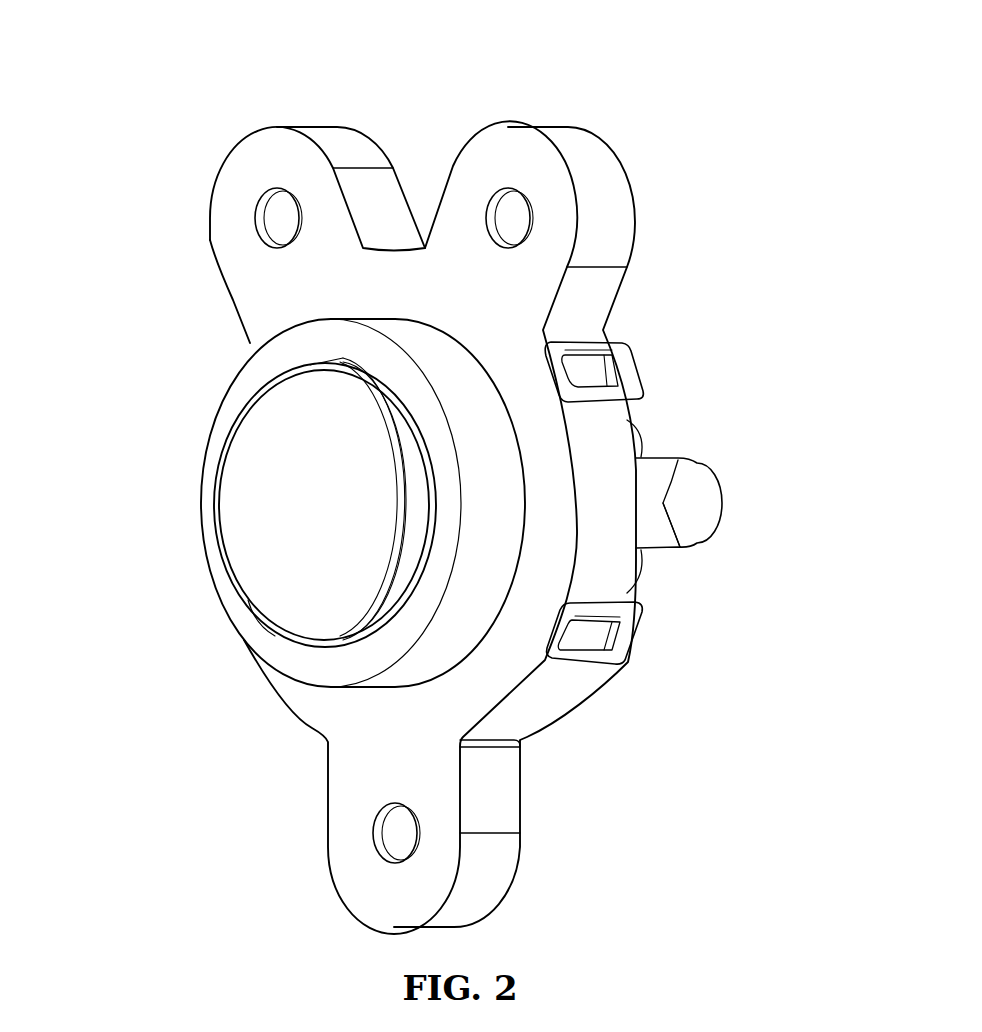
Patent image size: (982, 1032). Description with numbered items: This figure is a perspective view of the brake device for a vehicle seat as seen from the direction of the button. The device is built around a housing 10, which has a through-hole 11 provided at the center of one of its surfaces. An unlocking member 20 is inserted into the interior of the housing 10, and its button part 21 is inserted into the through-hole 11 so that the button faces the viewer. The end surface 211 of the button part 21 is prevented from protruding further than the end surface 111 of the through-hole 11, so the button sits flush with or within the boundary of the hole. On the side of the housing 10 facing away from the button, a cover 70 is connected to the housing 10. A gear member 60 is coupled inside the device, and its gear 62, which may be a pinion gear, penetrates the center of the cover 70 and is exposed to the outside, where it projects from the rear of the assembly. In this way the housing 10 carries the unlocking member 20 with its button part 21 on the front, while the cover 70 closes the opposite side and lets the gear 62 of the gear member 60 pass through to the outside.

The housing 10 is at (375, 135).
The through-hole 11 is at (240, 565).
The end surface of the through-hole 111 is at (273, 627).
The unlocking member 20 is at (233, 478).
The button part 21 is at (257, 510).
The end surface of the button part 211 is at (277, 408).
The gear member 60 is at (724, 483).
The gear 62 is at (652, 536).
The cover 70 is at (630, 356).